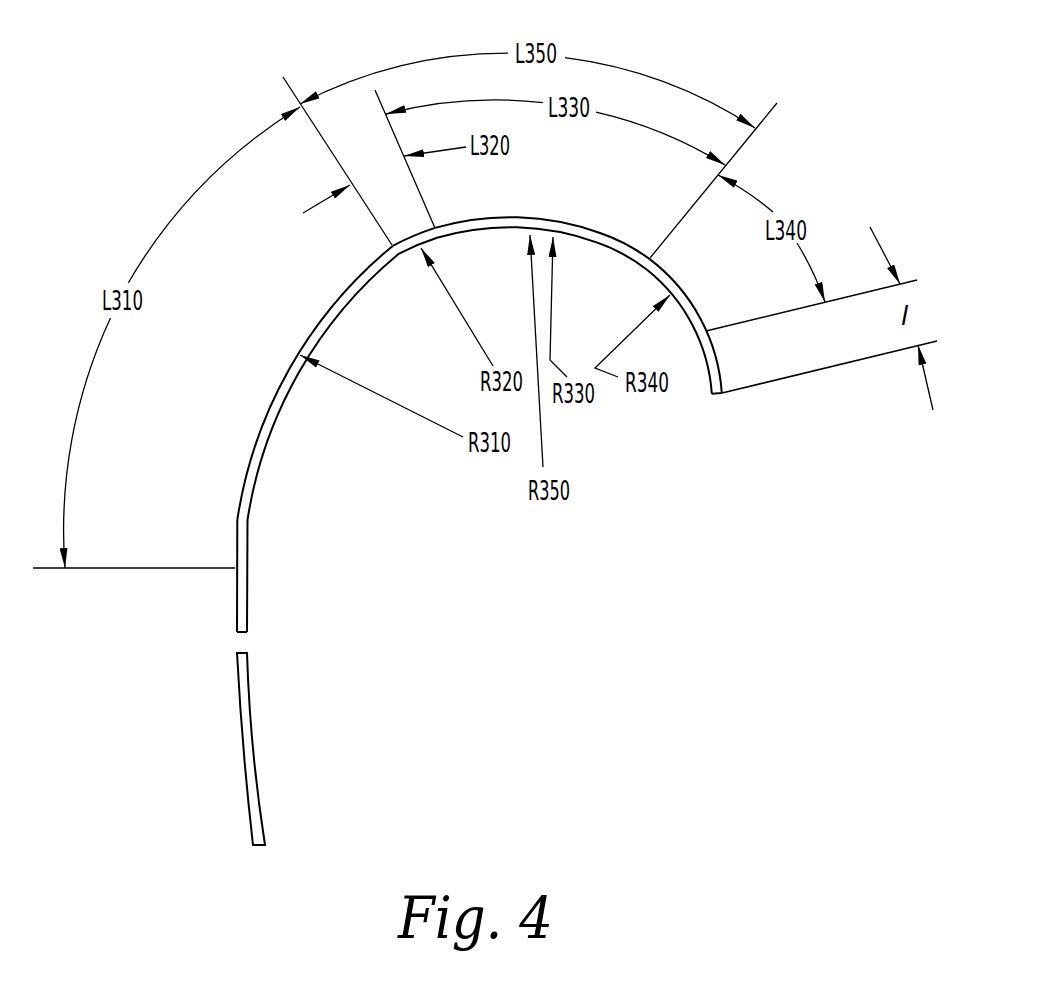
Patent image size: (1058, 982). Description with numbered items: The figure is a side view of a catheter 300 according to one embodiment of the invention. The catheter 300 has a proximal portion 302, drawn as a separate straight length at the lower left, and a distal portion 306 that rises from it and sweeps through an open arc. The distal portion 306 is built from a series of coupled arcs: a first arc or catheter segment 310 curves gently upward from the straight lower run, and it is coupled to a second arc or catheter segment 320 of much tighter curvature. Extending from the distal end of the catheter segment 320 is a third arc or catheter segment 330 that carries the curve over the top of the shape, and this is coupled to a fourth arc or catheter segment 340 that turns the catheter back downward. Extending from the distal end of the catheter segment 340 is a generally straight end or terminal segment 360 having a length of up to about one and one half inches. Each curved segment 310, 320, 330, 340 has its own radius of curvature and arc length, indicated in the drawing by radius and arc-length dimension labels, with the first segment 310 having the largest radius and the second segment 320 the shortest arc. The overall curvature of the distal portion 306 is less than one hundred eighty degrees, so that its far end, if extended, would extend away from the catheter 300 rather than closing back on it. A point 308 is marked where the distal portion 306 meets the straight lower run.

The catheter 300 is at (152, 82).
The proximal portion 302 is at (258, 733).
The distal portion 306 is at (235, 600).
The bend start point 308 is at (235, 567).
The first arc or catheter segment 310 is at (296, 350).
The second arc or catheter segment 320 is at (413, 250).
The third arc or catheter segment 330 is at (545, 217).
The fourth arc or catheter segment 340 is at (680, 284).
The generally straight end or terminal segment 360 is at (718, 362).